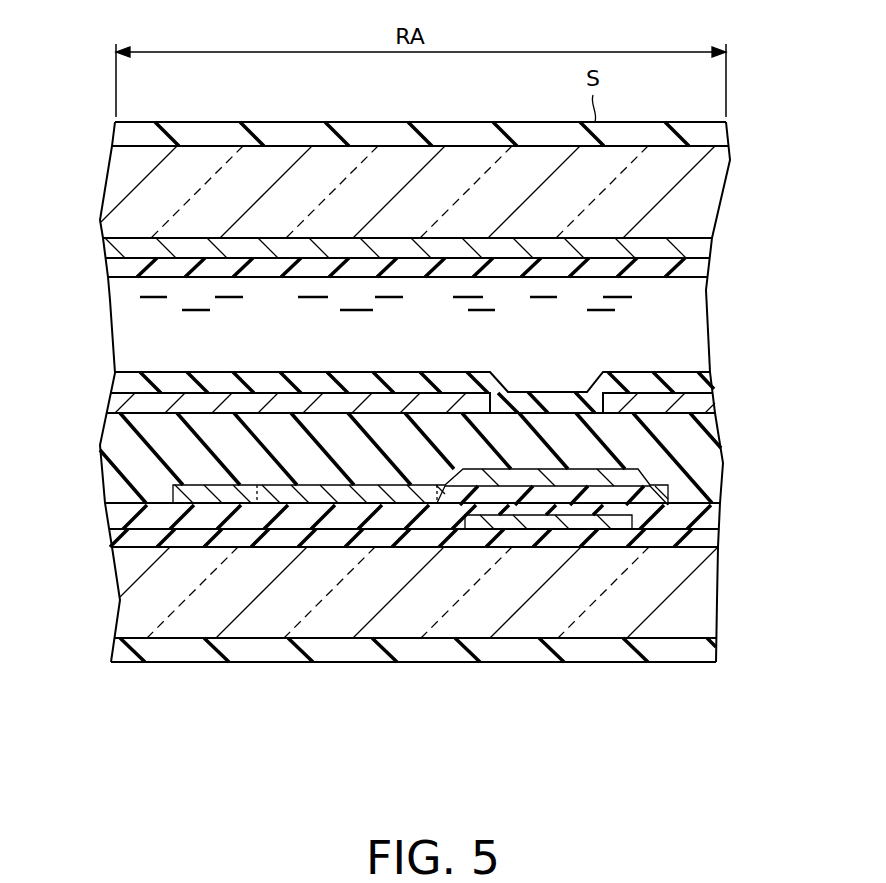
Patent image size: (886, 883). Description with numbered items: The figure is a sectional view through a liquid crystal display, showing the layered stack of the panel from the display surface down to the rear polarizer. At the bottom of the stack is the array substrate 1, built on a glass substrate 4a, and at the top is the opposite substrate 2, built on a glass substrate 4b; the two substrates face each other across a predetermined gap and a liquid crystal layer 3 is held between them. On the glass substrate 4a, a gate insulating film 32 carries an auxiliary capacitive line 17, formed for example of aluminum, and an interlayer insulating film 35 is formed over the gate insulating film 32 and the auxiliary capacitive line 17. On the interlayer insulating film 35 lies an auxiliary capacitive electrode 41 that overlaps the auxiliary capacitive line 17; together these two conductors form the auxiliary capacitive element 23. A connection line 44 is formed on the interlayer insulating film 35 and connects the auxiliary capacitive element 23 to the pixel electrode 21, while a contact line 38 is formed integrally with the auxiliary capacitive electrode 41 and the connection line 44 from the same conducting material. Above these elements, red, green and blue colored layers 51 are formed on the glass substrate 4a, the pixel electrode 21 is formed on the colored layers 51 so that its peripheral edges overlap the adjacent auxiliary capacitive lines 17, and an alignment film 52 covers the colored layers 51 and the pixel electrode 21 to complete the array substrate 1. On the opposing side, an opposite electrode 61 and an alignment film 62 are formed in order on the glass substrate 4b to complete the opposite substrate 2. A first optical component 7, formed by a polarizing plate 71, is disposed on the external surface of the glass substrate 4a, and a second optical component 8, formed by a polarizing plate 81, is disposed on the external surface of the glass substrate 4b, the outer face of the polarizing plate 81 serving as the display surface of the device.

The array substrate 1 is at (735, 495).
The opposite substrate 2 is at (733, 197).
The liquid crystal layer 3 is at (688, 325).
The glass substrate 4a is at (697, 594).
The glass substrate 4b is at (113, 208).
The first optical component 7 is at (565, 645).
The second optical component 8 is at (646, 131).
The auxiliary capacitive line 17 is at (500, 522).
The pixel electrode 21 is at (228, 400).
The auxiliary capacitive element 23 is at (525, 706).
The gate insulating film 32 is at (118, 540).
The interlayer insulating film 35 is at (705, 520).
The contact line 38 is at (222, 493).
The auxiliary capacitive electrode 41 is at (463, 477).
The connection line 44 is at (322, 493).
The colored layers 51 is at (115, 458).
The alignment film 52 is at (558, 398).
The opposite electrode 61 is at (693, 249).
The alignment film 62 is at (697, 267).
The polarizing plate 71 is at (637, 645).
The polarizing plate 81 is at (713, 135).